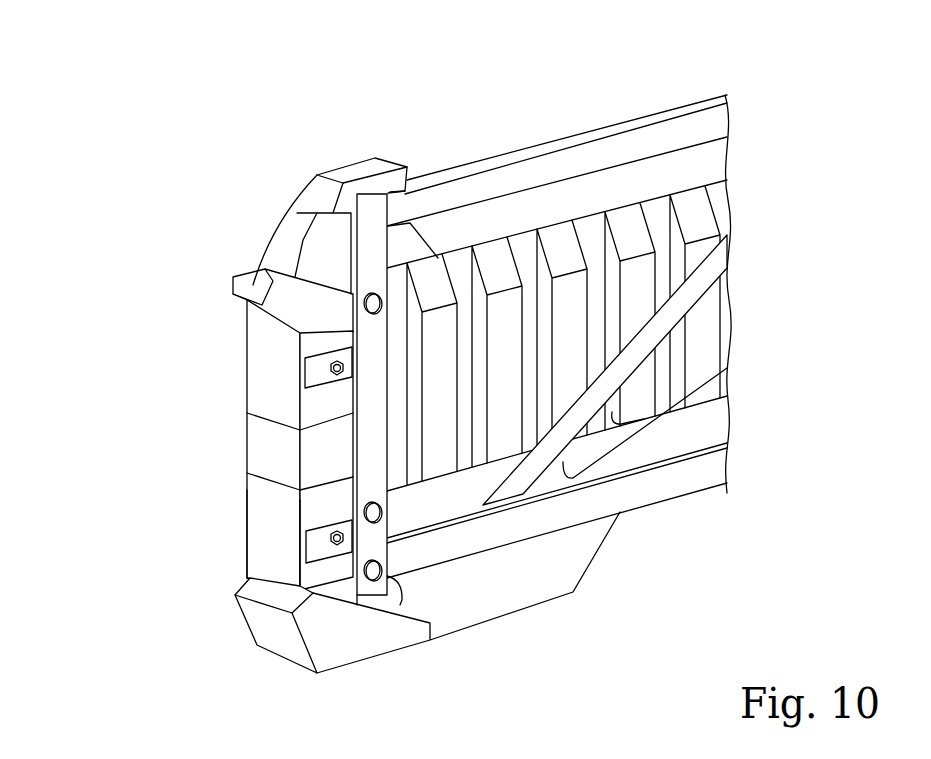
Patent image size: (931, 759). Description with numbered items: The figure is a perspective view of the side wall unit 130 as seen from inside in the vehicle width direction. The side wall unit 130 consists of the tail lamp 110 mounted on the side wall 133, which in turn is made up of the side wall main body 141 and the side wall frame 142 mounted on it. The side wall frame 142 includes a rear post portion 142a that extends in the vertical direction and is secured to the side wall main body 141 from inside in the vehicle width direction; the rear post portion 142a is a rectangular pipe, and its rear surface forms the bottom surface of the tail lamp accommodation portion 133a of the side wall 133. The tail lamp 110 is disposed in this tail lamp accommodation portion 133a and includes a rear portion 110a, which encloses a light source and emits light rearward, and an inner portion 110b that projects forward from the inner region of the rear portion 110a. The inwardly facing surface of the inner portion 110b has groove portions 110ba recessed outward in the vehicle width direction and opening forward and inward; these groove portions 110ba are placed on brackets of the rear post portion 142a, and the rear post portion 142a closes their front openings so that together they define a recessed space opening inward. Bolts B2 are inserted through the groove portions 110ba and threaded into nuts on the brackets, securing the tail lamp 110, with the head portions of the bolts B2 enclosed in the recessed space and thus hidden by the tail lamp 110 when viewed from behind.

The side wall unit 130 is at (113, 288).
The tail lamp 110 is at (273, 368).
The rear portion 110a is at (273, 523).
The inner portion 110b is at (326, 572).
The groove portions 110ba is at (317, 372).
The side wall 133 is at (477, 63).
The tail lamp accommodation portion 133a is at (290, 593).
The side wall main body 141 is at (357, 168).
The side wall frame 142 is at (460, 170).
The rear post portion 142a is at (375, 437).
The bolts B2 is at (340, 362).